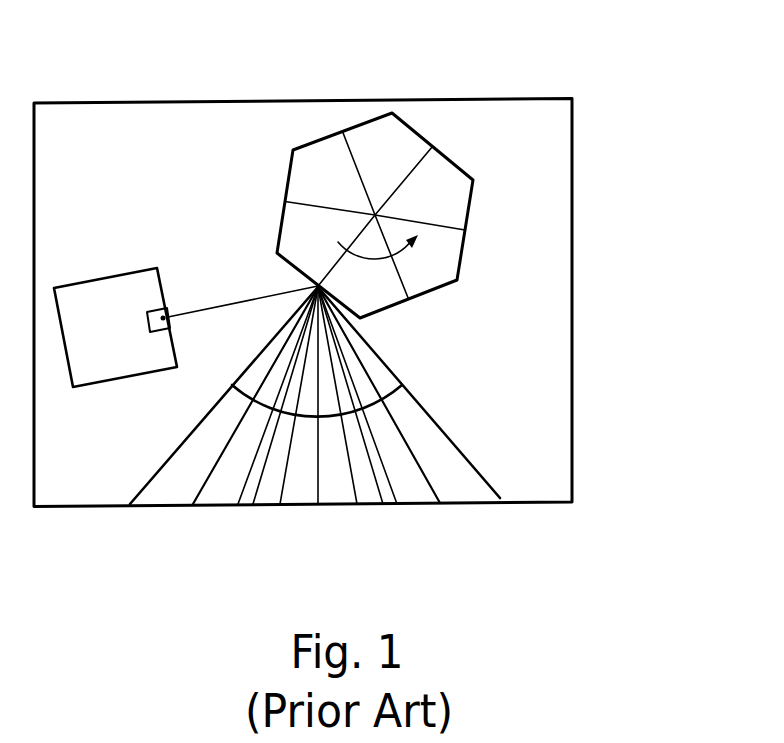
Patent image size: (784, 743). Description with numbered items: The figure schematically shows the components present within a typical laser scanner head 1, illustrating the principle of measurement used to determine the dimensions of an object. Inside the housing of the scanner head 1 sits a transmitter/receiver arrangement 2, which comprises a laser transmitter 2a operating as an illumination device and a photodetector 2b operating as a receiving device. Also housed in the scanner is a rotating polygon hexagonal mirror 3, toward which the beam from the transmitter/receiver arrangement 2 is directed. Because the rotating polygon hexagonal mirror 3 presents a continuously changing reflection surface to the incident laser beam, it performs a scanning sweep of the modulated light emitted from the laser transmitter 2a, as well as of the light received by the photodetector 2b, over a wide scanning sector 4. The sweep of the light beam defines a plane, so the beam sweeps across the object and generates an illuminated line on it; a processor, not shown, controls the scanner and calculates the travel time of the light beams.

The laser scanner head 1 is at (572, 168).
The transmitter/receiver arrangement 2 is at (101, 279).
The laser transmitter 2a is at (164, 314).
The photodetector 2b is at (156, 327).
The rotating polygon hexagonal mirror 3 is at (416, 125).
The scanning sector 4 is at (387, 403).